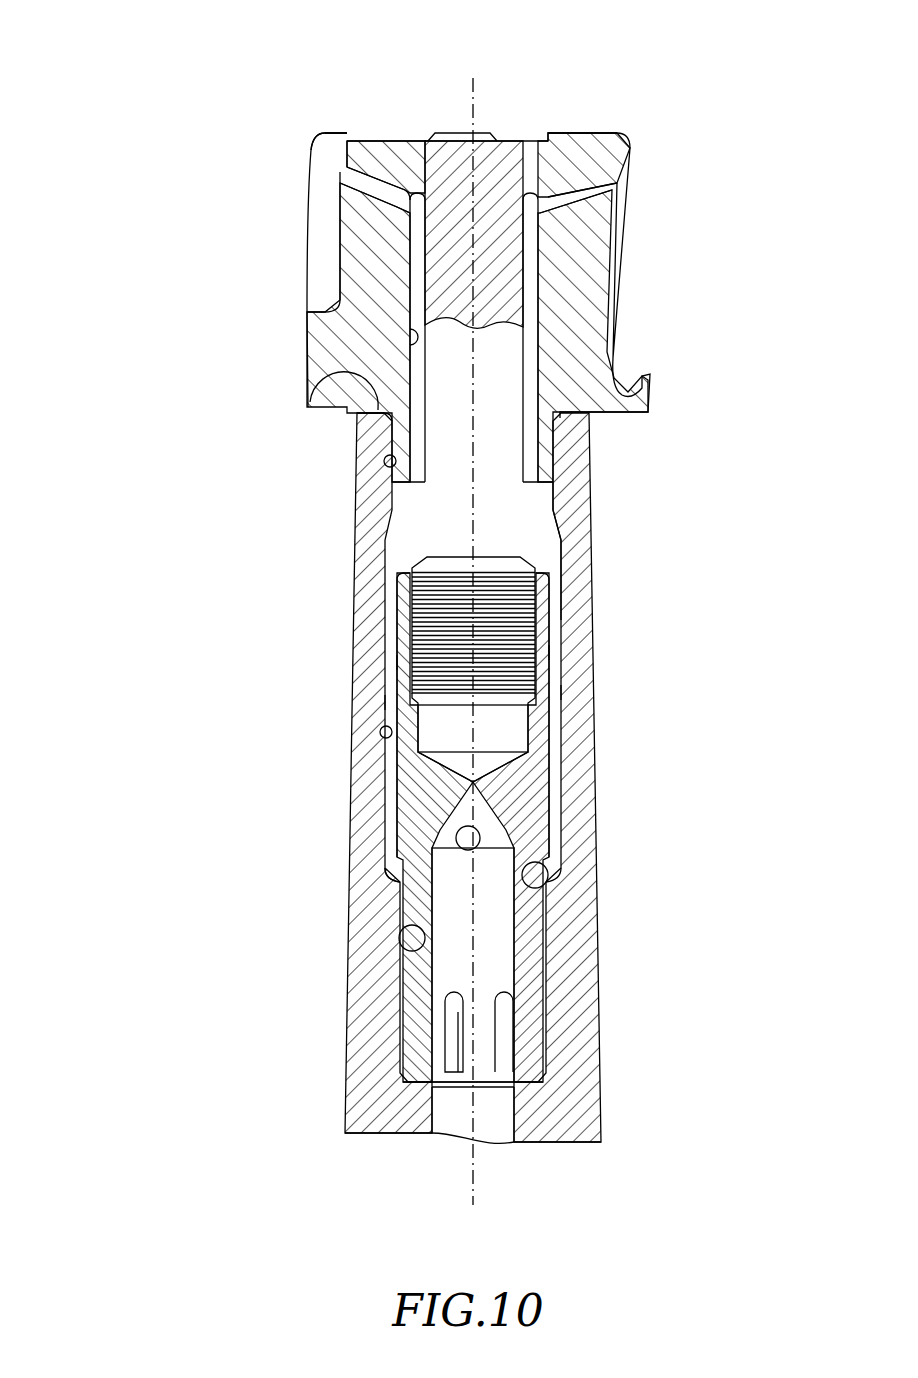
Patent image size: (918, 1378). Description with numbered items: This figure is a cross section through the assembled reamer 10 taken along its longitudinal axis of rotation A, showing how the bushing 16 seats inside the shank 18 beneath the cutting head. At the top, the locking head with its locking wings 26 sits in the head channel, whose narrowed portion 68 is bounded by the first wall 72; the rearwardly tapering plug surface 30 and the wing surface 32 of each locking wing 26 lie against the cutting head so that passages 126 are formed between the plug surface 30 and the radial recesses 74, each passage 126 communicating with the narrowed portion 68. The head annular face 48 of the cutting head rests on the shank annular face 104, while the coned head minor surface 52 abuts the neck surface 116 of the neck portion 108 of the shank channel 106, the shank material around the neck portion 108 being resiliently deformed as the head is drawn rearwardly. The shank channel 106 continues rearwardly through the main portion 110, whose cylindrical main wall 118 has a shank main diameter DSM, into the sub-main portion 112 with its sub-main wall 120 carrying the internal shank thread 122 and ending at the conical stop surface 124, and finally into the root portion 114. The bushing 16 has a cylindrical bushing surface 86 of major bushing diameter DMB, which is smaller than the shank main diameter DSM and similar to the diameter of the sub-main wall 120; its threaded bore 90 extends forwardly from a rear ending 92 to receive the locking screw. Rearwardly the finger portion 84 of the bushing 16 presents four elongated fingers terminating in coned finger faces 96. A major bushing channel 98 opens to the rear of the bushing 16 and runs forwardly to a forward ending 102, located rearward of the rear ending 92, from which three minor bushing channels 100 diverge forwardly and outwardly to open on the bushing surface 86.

The reamer 10 is at (183, 70).
The longitudinal axis of rotation A is at (475, 108).
The bushing 16 is at (395, 603).
The shank 18 is at (595, 773).
The locking wings 26 is at (383, 173).
The plug surface 30 is at (398, 205).
The wing surface 32 is at (335, 172).
The head annular face 48 is at (360, 432).
The head minor surface 52 is at (384, 461).
The narrowed portion 68 is at (532, 355).
The first wall 72 is at (405, 338).
The radial recesses 74 is at (348, 167).
The finger portion 84 is at (403, 1033).
The bushing surface 86 is at (397, 636).
The threaded bore 90 is at (510, 737).
The rear ending 92 is at (430, 768).
The finger face 96 is at (540, 1083).
The major bushing channel 98 is at (460, 925).
The minor bushing channels 100 is at (387, 866).
The forward ending 102 is at (453, 833).
The shank annular face 104 is at (340, 395).
The shank channel 106 is at (543, 543).
The neck portion 108 is at (547, 503).
The main portion 110 is at (558, 613).
The sub-main portion 112 is at (545, 907).
The root portion 114 is at (493, 1110).
The neck surface 116 is at (357, 497).
The main wall 118 is at (380, 732).
The sub-main wall 120 is at (424, 958).
The shank thread 122 is at (400, 1008).
The stop surface 124 is at (412, 1072).
The passages 126 is at (373, 193).
The major bushing diameter DMB is at (397, 662).
The shank main diameter DSM is at (387, 702).